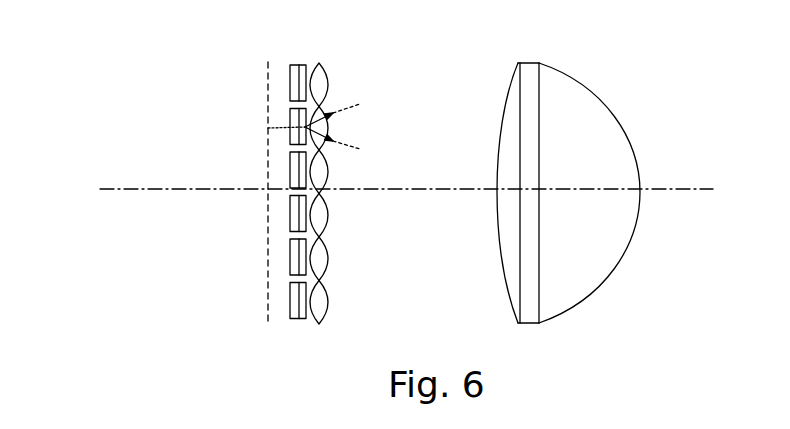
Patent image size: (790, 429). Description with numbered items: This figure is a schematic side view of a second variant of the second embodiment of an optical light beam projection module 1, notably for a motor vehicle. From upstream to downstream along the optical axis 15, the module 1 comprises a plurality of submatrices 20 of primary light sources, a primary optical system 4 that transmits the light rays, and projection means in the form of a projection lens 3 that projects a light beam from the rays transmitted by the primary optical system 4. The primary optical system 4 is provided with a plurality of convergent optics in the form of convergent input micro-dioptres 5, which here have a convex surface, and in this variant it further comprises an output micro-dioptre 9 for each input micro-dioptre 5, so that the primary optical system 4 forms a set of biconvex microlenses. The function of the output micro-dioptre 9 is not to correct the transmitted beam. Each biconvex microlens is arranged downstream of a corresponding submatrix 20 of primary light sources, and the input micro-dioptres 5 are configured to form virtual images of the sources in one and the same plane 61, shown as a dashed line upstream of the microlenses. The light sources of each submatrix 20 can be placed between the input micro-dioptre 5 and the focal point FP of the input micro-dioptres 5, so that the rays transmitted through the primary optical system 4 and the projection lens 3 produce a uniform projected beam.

The optical light beam projection module 1 is at (163, 120).
The projection lens 3 is at (568, 173).
The primary optical system 4 is at (354, 106).
The input micro-dioptre 5 is at (312, 259).
The output micro-dioptre 9 is at (320, 191).
The optical axis 15 is at (429, 167).
The submatrix of primary light sources 20 is at (290, 163).
The plane 61 is at (229, 179).
The focal point FP is at (268, 128).